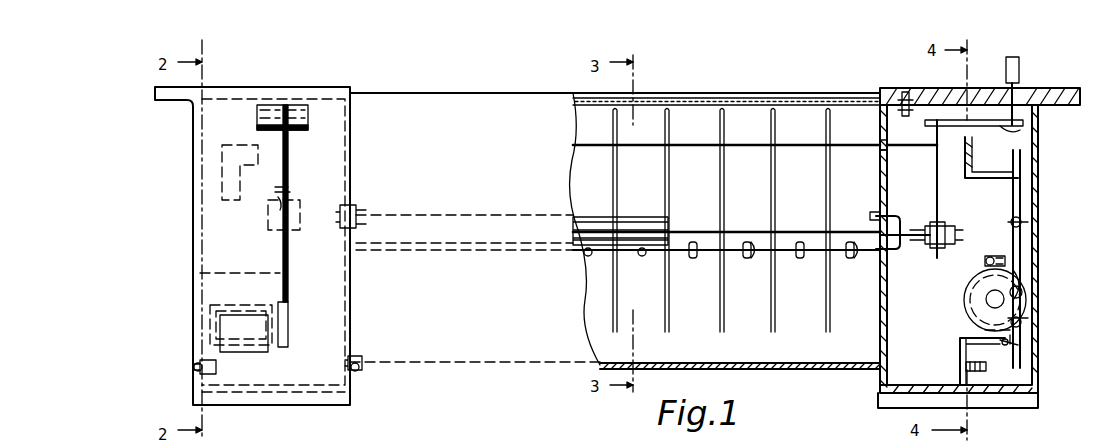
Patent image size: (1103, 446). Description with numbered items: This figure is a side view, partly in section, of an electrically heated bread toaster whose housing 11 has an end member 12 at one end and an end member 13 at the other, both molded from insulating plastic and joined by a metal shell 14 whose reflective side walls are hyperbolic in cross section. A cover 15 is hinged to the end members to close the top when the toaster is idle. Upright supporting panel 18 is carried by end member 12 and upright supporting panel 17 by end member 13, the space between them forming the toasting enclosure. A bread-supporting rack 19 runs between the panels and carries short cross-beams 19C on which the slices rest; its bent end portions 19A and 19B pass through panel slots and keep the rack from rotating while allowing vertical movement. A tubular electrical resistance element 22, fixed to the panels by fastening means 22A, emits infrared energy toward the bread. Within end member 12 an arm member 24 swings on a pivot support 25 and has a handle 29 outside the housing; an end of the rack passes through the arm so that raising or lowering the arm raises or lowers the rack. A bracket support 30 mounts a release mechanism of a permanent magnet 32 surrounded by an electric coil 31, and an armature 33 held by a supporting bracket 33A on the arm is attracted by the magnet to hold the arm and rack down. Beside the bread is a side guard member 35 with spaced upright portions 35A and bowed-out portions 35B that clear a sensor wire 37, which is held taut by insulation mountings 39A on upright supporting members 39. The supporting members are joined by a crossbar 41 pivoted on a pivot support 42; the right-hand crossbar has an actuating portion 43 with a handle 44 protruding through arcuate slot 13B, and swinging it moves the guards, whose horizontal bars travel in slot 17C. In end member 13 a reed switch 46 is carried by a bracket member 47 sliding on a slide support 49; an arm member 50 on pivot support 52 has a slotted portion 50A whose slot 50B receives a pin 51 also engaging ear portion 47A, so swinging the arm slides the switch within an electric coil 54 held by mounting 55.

The housing 11 is at (790, 373).
The end member 12 is at (312, 405).
The end member 13 is at (980, 408).
The arcuate slot 13B is at (1022, 95).
The metal shell 14 is at (448, 352).
The cover 15 is at (700, 98).
The upright supporting panel 17 is at (887, 312).
The slot 17C is at (880, 143).
The upright supporting panel 18 is at (352, 303).
The bread-supporting rack 19 is at (504, 252).
The bent end portion 19A is at (876, 216).
The bent end portion 19B is at (314, 207).
The cross-beams 19C is at (754, 256).
The tubular electrical resistance element 22 is at (645, 222).
The fastening means 22A is at (345, 212).
The arm member 24 is at (291, 152).
The pivot support 25 is at (258, 273).
The handle 29 is at (257, 116).
The bracket support 30 is at (212, 356).
The electric coil 31 is at (255, 340).
The permanent magnet 32 is at (208, 325).
The armature 33 is at (230, 160).
The supporting bracket 33A is at (270, 192).
The side guard member 35 is at (887, 145).
The upright portions 35A is at (724, 132).
The bowed-out portions 35B is at (724, 225).
The sensor wire 37 is at (697, 244).
The upright supporting member 39 is at (939, 197).
The insulation mounting 39A is at (940, 246).
The crossbar 41 is at (905, 92).
The pivot support 42 is at (963, 108).
The actuating portion 43 is at (1024, 126).
The handle 44 is at (1006, 72).
The reed switch 46 is at (990, 300).
The bracket member 47 is at (985, 352).
The ear portion 47A is at (1019, 345).
The slide support 49 is at (966, 378).
The arm member 50 is at (1021, 190).
The slotted portion 50A is at (1022, 274).
The slot 50B is at (975, 165).
The pin 51 is at (1024, 320).
The pivot support 52 is at (1024, 222).
The electric coil 54 is at (1023, 292).
The mounting 55 is at (991, 256).